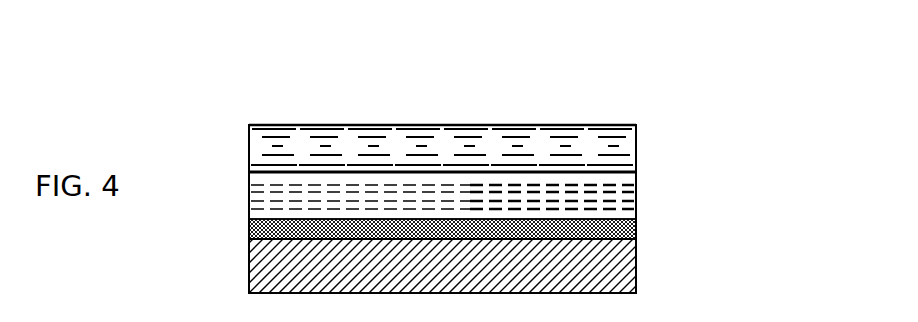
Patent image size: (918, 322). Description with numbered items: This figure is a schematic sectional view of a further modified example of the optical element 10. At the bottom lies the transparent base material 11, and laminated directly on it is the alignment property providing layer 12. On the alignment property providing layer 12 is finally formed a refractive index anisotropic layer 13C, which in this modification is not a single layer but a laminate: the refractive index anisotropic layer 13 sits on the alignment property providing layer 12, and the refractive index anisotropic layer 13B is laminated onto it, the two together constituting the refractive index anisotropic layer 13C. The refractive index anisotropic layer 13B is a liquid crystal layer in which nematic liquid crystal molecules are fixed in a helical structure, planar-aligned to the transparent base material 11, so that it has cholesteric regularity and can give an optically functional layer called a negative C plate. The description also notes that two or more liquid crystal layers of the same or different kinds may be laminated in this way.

The optical element 10 is at (525, 106).
The transparent base material 11 is at (618, 263).
The alignment property providing layer 12 is at (636, 226).
The refractive index anisotropic layer 13 is at (612, 187).
The refractive index anisotropic layer 13B is at (612, 150).
The refractive index anisotropic layer 13C is at (548, 172).